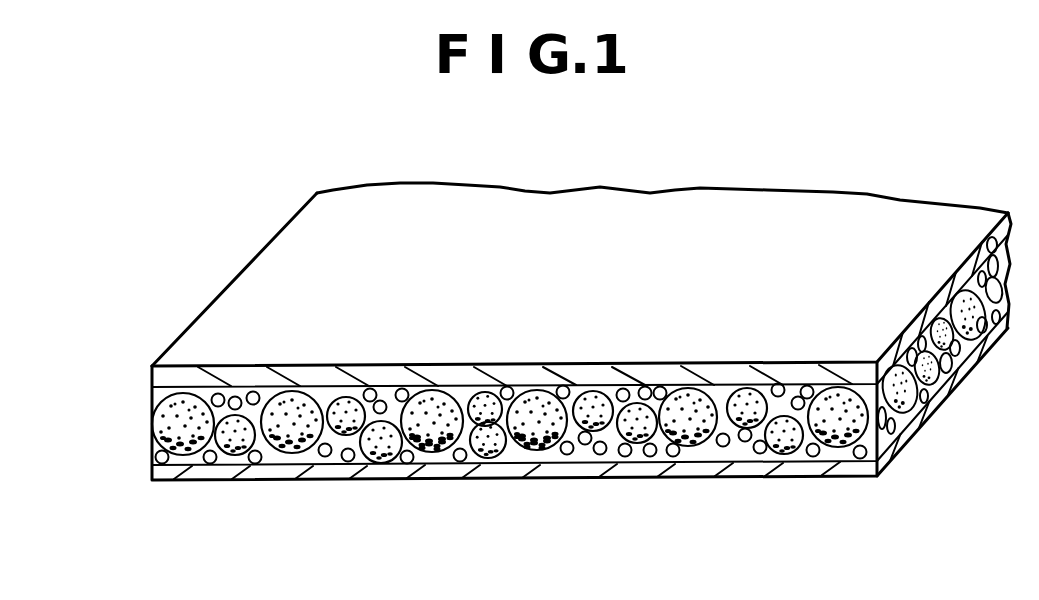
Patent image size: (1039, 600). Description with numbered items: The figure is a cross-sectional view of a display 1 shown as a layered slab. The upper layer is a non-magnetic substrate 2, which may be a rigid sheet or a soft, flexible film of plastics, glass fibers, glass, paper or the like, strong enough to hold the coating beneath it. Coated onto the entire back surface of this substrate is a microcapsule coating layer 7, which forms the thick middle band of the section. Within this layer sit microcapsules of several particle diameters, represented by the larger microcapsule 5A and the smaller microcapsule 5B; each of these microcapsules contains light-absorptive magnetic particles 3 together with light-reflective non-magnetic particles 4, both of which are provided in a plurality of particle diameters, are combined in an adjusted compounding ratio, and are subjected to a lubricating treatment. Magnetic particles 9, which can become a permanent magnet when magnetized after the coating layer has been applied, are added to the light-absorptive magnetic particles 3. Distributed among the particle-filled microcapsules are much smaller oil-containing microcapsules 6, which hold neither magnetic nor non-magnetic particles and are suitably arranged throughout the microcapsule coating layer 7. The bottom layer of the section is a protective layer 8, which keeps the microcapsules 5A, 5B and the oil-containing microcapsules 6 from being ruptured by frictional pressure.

The display 1 is at (246, 252).
The non-magnetic substrate 2 is at (205, 335).
The light-absorptive magnetic particles 3 is at (447, 467).
The light-reflective non-magnetic particles 4 is at (302, 392).
The microcapsule 5A is at (173, 483).
The microcapsule 5B is at (357, 468).
The oil-containing microcapsules 6 is at (653, 457).
The microcapsule coating layer 7 is at (142, 412).
The protective layer 8 is at (197, 472).
The magnetic particles 9 is at (437, 467).